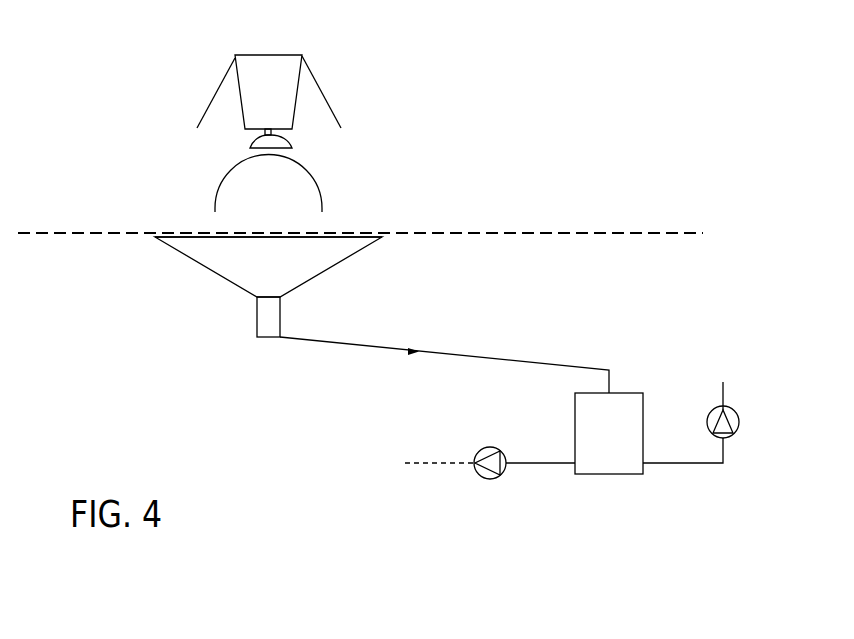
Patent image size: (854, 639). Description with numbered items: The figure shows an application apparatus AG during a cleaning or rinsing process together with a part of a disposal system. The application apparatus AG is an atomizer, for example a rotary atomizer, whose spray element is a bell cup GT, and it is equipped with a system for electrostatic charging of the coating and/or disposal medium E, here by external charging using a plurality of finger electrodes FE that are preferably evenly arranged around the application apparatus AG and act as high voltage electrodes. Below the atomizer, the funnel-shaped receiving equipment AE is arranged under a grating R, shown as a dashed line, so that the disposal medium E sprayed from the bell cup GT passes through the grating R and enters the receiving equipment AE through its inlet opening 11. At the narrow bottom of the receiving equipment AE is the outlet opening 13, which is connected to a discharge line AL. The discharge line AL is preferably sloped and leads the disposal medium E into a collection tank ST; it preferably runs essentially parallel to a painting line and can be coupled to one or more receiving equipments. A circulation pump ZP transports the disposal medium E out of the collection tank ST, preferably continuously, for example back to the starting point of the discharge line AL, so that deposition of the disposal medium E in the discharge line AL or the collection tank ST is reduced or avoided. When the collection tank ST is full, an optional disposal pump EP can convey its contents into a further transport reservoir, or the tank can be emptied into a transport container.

The application apparatus AG is at (233, 60).
The finger electrodes FE is at (197, 125).
The bell cup GT is at (247, 147).
The disposal medium E is at (222, 193).
The grating R is at (503, 227).
The inlet opening 11 is at (360, 233).
The receiving equipment AE is at (191, 277).
The outlet opening 13 is at (258, 337).
The discharge line AL is at (465, 353).
The collection tank ST is at (628, 392).
The circulation pump ZP is at (498, 448).
The disposal pump EP is at (730, 408).